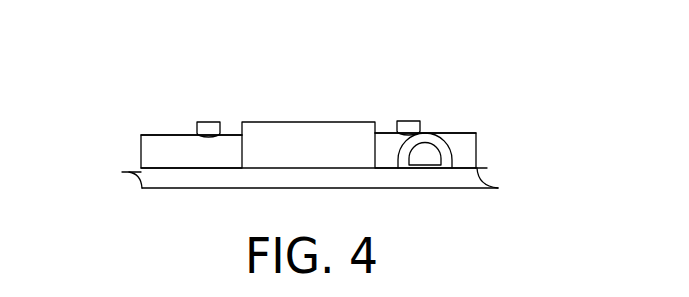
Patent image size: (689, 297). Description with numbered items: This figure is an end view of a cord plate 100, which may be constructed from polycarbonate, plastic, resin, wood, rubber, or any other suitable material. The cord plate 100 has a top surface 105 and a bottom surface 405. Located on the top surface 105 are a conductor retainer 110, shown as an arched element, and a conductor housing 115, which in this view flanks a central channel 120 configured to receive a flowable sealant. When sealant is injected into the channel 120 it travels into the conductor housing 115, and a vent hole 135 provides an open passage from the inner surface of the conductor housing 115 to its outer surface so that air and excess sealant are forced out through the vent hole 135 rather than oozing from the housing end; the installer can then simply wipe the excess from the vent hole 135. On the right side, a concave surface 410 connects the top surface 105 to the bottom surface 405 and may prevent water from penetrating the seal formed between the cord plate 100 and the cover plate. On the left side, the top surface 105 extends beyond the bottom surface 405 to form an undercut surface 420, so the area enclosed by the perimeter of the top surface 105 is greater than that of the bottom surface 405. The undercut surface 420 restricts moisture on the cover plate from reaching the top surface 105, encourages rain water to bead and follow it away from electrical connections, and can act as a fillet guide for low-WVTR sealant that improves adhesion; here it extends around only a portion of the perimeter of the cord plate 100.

The cord plate 100 is at (136, 41).
The top surface 105 is at (163, 157).
The conductor retainer 110 is at (450, 152).
The conductor housing 115 is at (162, 137).
The channel 120 is at (313, 113).
The vent hole 135 is at (207, 121).
The bottom surface 405 is at (203, 198).
The concave surface 410 is at (485, 194).
The undercut surface 420 is at (128, 175).